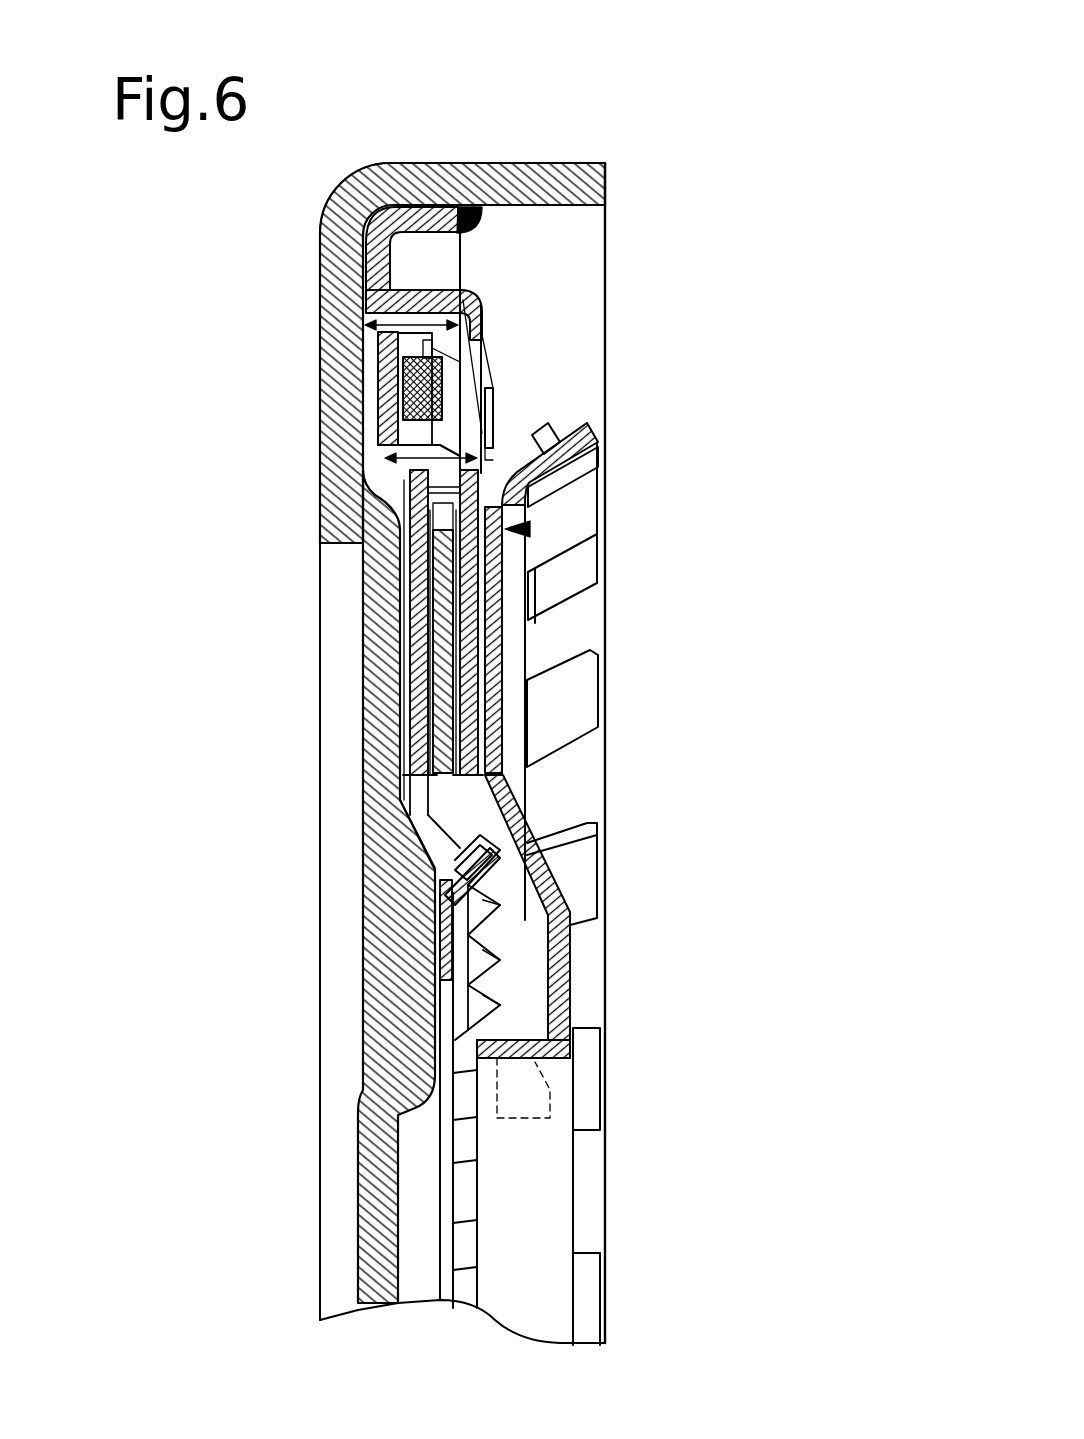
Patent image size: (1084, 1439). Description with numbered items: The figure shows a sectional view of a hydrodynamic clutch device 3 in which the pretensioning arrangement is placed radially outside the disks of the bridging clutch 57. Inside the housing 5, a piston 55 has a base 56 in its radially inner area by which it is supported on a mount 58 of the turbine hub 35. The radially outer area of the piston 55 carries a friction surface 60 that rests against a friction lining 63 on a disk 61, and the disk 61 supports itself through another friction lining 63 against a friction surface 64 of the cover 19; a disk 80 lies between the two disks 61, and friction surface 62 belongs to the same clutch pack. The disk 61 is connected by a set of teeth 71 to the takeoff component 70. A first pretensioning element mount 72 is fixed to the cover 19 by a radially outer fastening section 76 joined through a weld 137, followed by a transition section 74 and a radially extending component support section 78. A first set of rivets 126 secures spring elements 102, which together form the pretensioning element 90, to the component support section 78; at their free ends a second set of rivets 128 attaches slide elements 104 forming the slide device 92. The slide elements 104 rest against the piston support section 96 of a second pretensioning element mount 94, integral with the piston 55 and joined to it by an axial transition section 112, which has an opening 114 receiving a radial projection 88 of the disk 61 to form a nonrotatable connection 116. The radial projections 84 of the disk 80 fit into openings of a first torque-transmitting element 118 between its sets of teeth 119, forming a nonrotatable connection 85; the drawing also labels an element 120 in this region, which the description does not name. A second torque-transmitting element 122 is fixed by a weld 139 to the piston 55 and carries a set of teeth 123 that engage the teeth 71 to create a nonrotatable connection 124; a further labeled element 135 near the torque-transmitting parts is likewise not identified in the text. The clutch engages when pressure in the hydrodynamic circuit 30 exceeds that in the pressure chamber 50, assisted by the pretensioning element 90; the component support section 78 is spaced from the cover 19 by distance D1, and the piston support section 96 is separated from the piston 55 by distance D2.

The hydrodynamic clutch device 3 is at (582, 278).
The housing 5 is at (540, 183).
The cover 19 is at (385, 522).
The hydrodynamic circuit 30 is at (570, 300).
The turbine hub 35 is at (527, 1120).
The pressure chamber 50 is at (390, 885).
The piston 55 is at (555, 878).
The base 56 is at (530, 1048).
The bridging clutch 57 is at (425, 840).
The mount 58 is at (580, 1060).
The friction surface 60 is at (592, 660).
The disk 61 is at (428, 790).
The friction surface 62 is at (470, 615).
The friction lining 63 is at (445, 735).
The friction surface 64 is at (440, 650).
The takeoff component 70 is at (570, 510).
The set of teeth 71 is at (548, 462).
The first pretensioning element mount 72 is at (365, 240).
The transition section 74 is at (393, 212).
The radially outer fastening section 76 is at (428, 215).
The component support section 78 is at (498, 378).
The disk 80 is at (425, 705).
The radial projections 84 is at (495, 905).
The nonrotatable connection 85 is at (495, 880).
The radial projection 88 is at (495, 420).
The pretensioning element 90 is at (481, 340).
The slide device 92 is at (400, 336).
The second pretensioning element mount 94 is at (378, 445).
The piston support section 96 is at (380, 395).
The spring elements 102 is at (560, 250).
The slide element 104 is at (400, 345).
The transition section 112 is at (530, 530).
The opening 114 is at (428, 545).
The nonrotatable connection 116 is at (440, 567).
The first torque-transmitting element 118 is at (452, 995).
The sets of teeth 119 is at (480, 1040).
The spring strip 120 is at (440, 930).
The second torque-transmitting element 122 is at (527, 580).
The set of teeth 123 is at (560, 485).
The nonrotatable connection 124 is at (560, 435).
The first set of rivets 126 is at (497, 400).
The second set of rivets 128 is at (403, 380).
The lower latch 135 is at (527, 615).
The weld 137 is at (465, 165).
The weld 139 is at (500, 548).
The axial distance D1 is at (370, 320).
The distance D2 is at (383, 458).